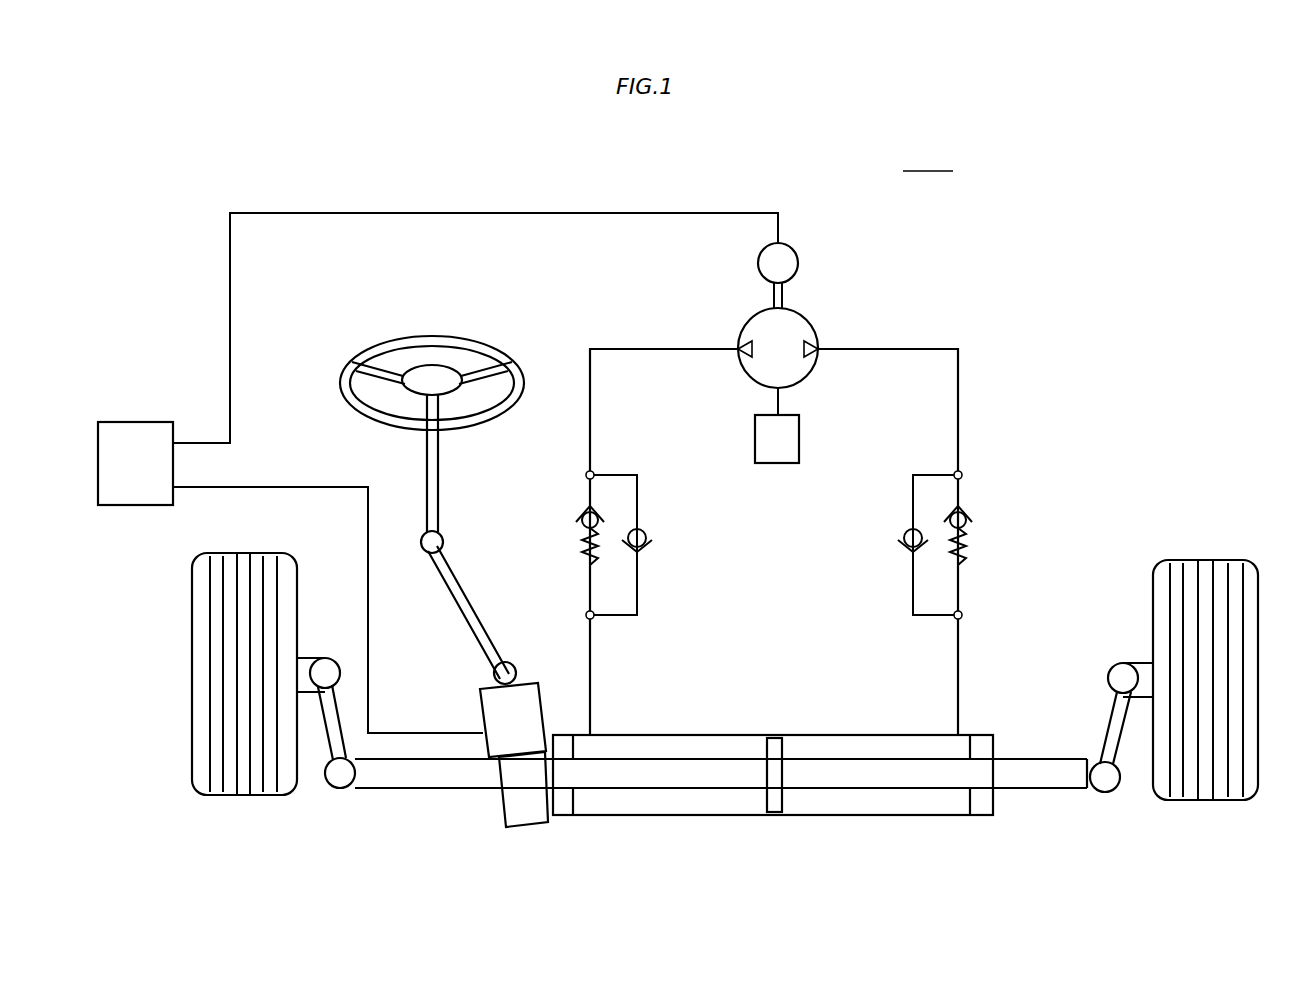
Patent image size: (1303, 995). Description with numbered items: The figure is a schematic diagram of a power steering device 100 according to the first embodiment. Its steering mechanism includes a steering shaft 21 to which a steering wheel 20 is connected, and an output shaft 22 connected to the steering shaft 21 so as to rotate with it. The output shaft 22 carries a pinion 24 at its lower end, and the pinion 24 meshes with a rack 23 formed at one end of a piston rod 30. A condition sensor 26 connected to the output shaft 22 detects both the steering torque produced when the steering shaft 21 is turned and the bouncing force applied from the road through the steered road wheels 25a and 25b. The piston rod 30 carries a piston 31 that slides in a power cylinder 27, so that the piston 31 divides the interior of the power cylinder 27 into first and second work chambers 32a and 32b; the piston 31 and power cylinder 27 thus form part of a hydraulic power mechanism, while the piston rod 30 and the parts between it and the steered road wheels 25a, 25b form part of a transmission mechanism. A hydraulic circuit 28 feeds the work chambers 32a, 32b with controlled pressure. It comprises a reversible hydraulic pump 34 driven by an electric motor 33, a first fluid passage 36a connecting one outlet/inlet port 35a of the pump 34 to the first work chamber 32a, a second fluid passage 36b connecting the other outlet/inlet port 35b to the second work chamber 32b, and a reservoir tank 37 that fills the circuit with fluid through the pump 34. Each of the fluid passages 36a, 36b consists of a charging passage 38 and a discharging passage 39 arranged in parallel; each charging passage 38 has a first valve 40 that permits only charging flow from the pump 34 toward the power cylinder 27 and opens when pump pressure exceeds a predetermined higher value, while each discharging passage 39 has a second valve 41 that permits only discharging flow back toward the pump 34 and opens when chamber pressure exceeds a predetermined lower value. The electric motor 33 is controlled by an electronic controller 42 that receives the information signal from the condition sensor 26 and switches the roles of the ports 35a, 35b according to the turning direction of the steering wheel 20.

The power steering device 100 is at (928, 159).
The steering wheel 20 is at (432, 337).
The steering shaft 21 is at (440, 465).
The output shaft 22 is at (482, 612).
The rack 23 is at (492, 772).
The pinion 24 is at (522, 824).
The steered road wheel 25a is at (242, 797).
The steered road wheel 25b is at (1205, 803).
The condition sensor 26 is at (482, 704).
The power cylinder 27 is at (852, 815).
The hydraulic circuit 28 is at (991, 337).
The piston rod 30 is at (1050, 792).
The piston 31 is at (767, 793).
The first work chamber 32a is at (648, 808).
The second work chamber 32b is at (930, 808).
The electric motor 33 is at (796, 248).
The reversible hydraulic pump 34 is at (804, 318).
The outlet/inlet port 35a is at (738, 345).
The outlet/inlet port 35b is at (818, 345).
The first fluid passage 36a is at (590, 397).
The second fluid passage 36b is at (960, 419).
The reservoir tank 37 is at (755, 441).
The charging passage 38 is at (590, 494).
The discharging passage 39 is at (640, 492).
The first valve 40 is at (580, 528).
The second valve 41 is at (645, 530).
The electronic controller 42 is at (136, 422).